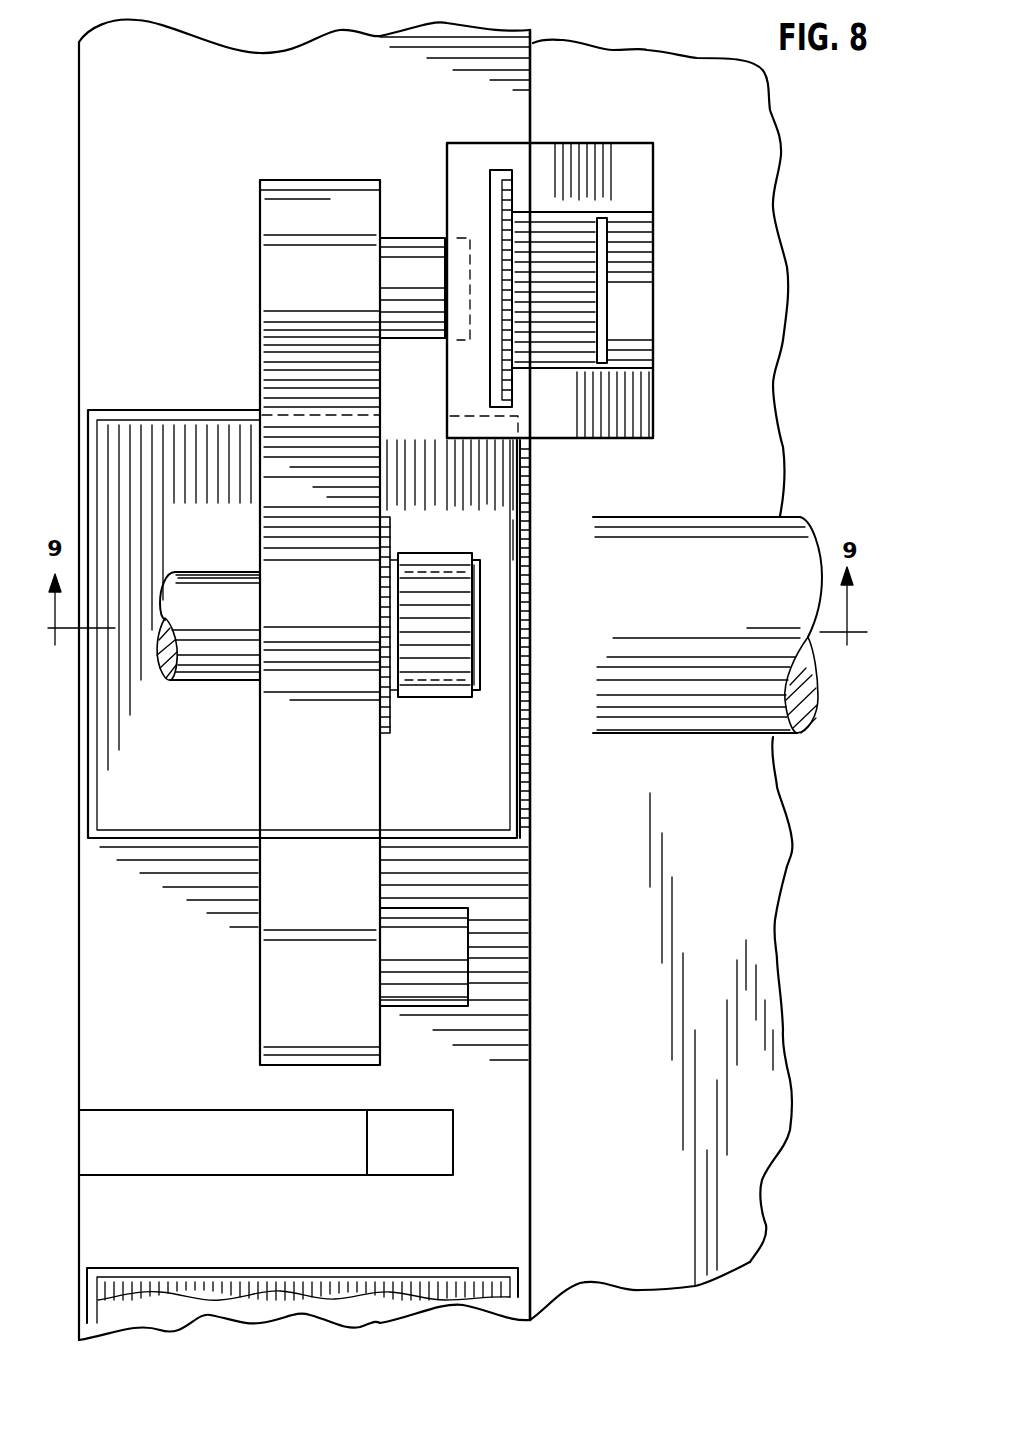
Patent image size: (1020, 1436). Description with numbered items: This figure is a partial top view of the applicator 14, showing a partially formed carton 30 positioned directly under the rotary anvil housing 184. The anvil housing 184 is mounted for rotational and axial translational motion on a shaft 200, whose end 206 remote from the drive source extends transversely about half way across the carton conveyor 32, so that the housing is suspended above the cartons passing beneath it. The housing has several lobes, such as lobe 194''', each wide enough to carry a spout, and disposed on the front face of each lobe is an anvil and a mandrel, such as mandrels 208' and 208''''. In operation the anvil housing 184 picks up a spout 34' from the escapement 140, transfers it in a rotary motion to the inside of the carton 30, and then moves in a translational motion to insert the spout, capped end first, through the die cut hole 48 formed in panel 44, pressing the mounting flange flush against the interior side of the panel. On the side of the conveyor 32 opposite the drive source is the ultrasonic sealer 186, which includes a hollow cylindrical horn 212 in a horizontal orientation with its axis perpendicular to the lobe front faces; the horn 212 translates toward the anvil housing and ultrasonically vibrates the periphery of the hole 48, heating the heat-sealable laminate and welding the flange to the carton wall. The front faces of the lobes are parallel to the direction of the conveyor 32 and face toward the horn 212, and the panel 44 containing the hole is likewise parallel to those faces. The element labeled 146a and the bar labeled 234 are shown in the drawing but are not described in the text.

The applicator 14 is at (706, 830).
The partially formed carton 30 is at (525, 487).
The carton conveyor 32 is at (82, 1022).
The spout 34' is at (530, 665).
The panel 44 is at (523, 788).
The die cut hole 48 is at (523, 568).
The escapement 140 is at (615, 157).
The housing portion 146a is at (655, 157).
The rotary anvil housing 184 is at (305, 180).
The ultrasonic sealer 186 is at (740, 520).
The lobe 194''' is at (320, 957).
The shaft 200 is at (243, 650).
The end of shaft 206 is at (260, 587).
The mandrel 208' is at (430, 644).
The mandrel 208'''' is at (426, 1001).
The horn 212 is at (720, 737).
The bar 234 is at (403, 1175).